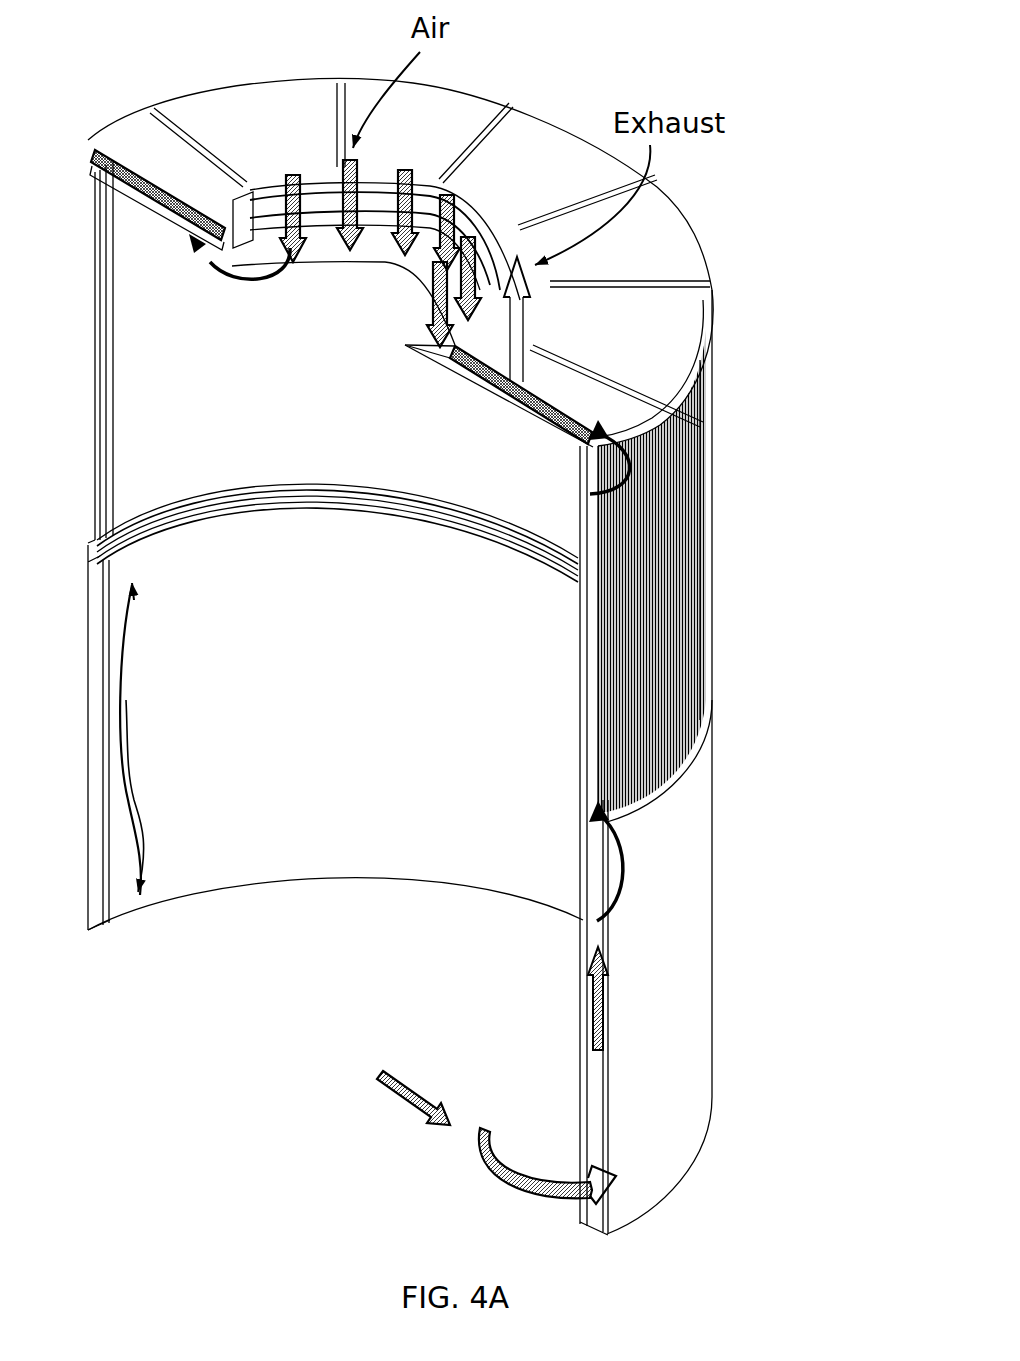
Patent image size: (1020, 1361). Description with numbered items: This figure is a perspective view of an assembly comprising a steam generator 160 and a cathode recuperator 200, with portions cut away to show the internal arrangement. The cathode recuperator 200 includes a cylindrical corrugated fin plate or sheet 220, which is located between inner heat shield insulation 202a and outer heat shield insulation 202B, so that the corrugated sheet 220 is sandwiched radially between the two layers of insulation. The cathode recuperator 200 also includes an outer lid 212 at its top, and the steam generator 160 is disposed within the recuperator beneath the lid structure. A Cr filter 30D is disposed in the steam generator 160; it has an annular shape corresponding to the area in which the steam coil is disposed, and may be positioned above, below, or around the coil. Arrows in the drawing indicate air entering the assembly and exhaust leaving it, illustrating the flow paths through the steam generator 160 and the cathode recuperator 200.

The steam generator 160 is at (124, 150).
The outer lid 212 is at (538, 146).
The Cr filter 30D is at (503, 403).
The cathode recuperator 200 is at (742, 458).
The cylindrical corrugated fin plate or sheet 220 is at (704, 586).
The inner heat shield insulation 202a is at (578, 884).
The outer heat shield insulation 202B is at (671, 857).